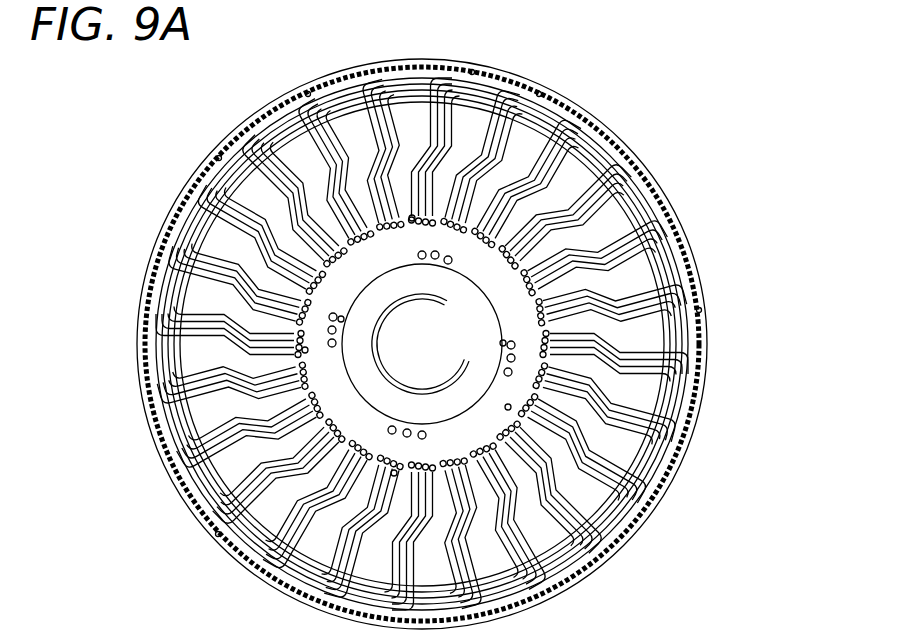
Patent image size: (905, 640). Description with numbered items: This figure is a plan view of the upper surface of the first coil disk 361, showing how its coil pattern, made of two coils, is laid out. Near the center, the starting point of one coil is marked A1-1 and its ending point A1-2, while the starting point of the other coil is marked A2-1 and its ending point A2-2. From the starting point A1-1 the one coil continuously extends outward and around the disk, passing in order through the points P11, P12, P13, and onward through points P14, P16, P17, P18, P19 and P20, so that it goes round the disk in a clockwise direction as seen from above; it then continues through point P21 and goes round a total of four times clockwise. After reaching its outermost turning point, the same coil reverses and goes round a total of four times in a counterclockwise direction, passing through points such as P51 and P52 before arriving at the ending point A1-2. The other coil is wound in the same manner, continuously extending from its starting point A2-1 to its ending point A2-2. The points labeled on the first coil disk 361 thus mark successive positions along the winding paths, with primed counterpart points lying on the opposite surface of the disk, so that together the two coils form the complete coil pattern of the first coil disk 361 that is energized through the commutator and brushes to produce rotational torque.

The first coil disk 361 is at (485, 344).
The point P11 is at (540, 92).
The point P12 is at (502, 340).
The point P13 is at (701, 310).
The point P14 is at (506, 407).
The point P16 is at (392, 475).
The point P17 is at (217, 536).
The point P18 is at (307, 352).
The point P19 is at (218, 156).
The point P20 is at (410, 220).
The point P21 is at (473, 70).
The point P51 is at (307, 92).
The point P52 is at (340, 317).
The starting point of one coil A1-1 is at (422, 258).
The ending point of one coil A1-2 is at (436, 260).
The starting point of other coil A2-1 is at (508, 345).
The ending point of other coil A2-2 is at (508, 358).